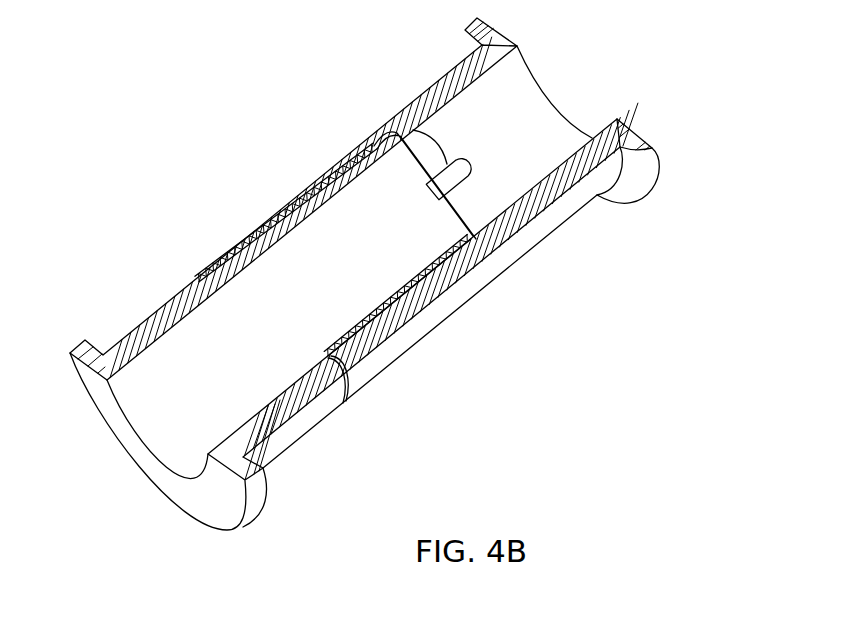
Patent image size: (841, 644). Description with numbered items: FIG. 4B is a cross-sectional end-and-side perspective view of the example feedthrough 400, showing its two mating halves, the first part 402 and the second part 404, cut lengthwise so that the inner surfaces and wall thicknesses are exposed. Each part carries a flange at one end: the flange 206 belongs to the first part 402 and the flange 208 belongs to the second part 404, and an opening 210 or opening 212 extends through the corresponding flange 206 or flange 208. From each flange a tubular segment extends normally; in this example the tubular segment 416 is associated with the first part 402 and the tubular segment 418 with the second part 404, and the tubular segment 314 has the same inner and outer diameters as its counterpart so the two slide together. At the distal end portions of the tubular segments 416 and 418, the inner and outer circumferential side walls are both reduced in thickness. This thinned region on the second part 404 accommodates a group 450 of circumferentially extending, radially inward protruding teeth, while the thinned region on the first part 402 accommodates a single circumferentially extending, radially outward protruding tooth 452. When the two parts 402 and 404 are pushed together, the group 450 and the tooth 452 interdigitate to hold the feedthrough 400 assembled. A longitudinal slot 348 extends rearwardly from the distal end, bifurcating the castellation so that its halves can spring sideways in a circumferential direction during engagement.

The feedthrough 400 is at (120, 150).
The first part 402 is at (435, 64).
The second part 404 is at (117, 282).
The longitudinal slot 348 is at (406, 132).
The single tooth 452 is at (208, 277).
The group of teeth 450 is at (413, 312).
The opening 210 is at (556, 118).
The opening 212 is at (157, 446).
The flange 208 is at (211, 511).
The flange 206 is at (629, 142).
The tubular segment 418 is at (623, 198).
The tubular segment 314 is at (557, 221).
The tubular segment 416 is at (310, 420).